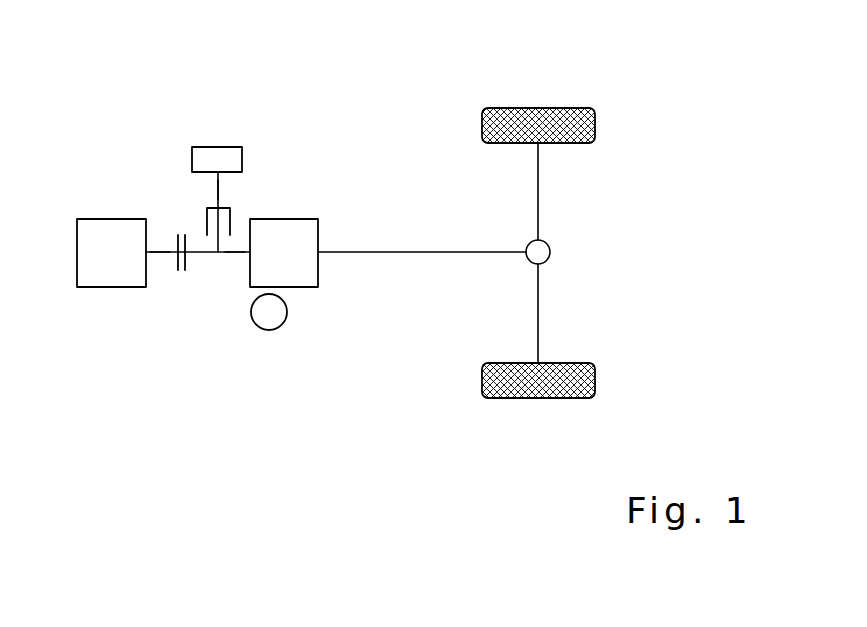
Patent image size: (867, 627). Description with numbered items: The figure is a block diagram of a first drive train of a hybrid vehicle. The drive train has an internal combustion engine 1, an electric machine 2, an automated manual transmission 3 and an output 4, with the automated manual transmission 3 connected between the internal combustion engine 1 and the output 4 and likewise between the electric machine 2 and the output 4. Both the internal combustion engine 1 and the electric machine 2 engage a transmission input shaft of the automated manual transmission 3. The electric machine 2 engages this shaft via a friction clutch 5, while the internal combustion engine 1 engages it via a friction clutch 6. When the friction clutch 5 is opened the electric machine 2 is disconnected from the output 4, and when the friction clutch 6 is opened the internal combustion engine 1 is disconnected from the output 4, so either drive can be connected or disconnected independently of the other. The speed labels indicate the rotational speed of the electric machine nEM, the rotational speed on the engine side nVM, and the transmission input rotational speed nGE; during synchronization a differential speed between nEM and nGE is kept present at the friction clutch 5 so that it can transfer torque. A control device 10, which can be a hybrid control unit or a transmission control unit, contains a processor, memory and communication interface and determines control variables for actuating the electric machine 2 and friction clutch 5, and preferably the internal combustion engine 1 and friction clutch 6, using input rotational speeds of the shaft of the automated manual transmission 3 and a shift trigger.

The internal combustion engine 1 is at (113, 237).
The electric machine 2 is at (230, 155).
The automated manual transmission 3 is at (290, 237).
The output 4 is at (493, 107).
The friction clutch 5 is at (236, 207).
The friction clutch 6 is at (183, 277).
The control device 10 is at (272, 315).
The rotational speed of the electric machine nEM is at (217, 190).
The combustion engine speed nVM is at (160, 254).
The transmission input rotational speed nGE is at (232, 256).